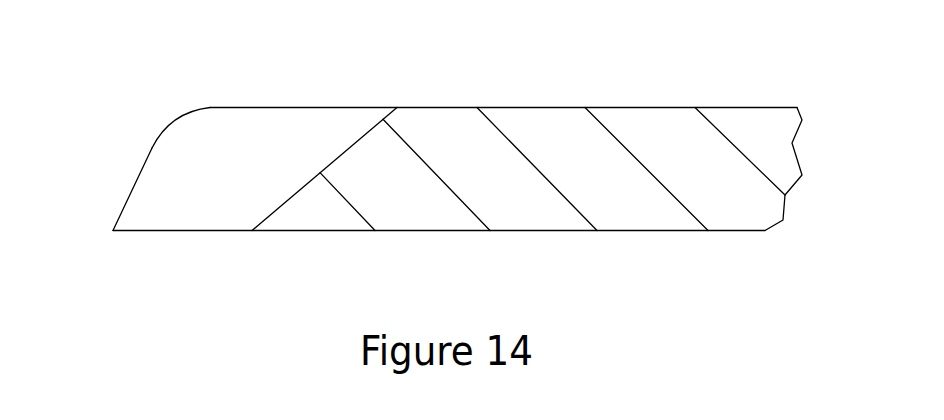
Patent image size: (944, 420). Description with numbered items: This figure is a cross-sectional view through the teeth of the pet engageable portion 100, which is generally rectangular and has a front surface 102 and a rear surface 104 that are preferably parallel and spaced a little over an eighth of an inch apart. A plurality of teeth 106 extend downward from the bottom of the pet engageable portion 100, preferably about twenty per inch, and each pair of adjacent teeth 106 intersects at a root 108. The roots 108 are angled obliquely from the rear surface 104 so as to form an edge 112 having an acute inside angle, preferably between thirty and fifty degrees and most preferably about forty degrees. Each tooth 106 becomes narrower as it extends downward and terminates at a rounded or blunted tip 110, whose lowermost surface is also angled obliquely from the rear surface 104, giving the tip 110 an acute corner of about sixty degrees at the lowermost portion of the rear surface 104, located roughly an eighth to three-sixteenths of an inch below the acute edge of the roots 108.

The pet engageable portion 100 is at (752, 120).
The front surface 102 is at (620, 108).
The rear surface 104 is at (653, 230).
The teeth 106 is at (203, 197).
The root 108 is at (343, 150).
The tip 110 is at (137, 183).
The edge 112 is at (262, 225).